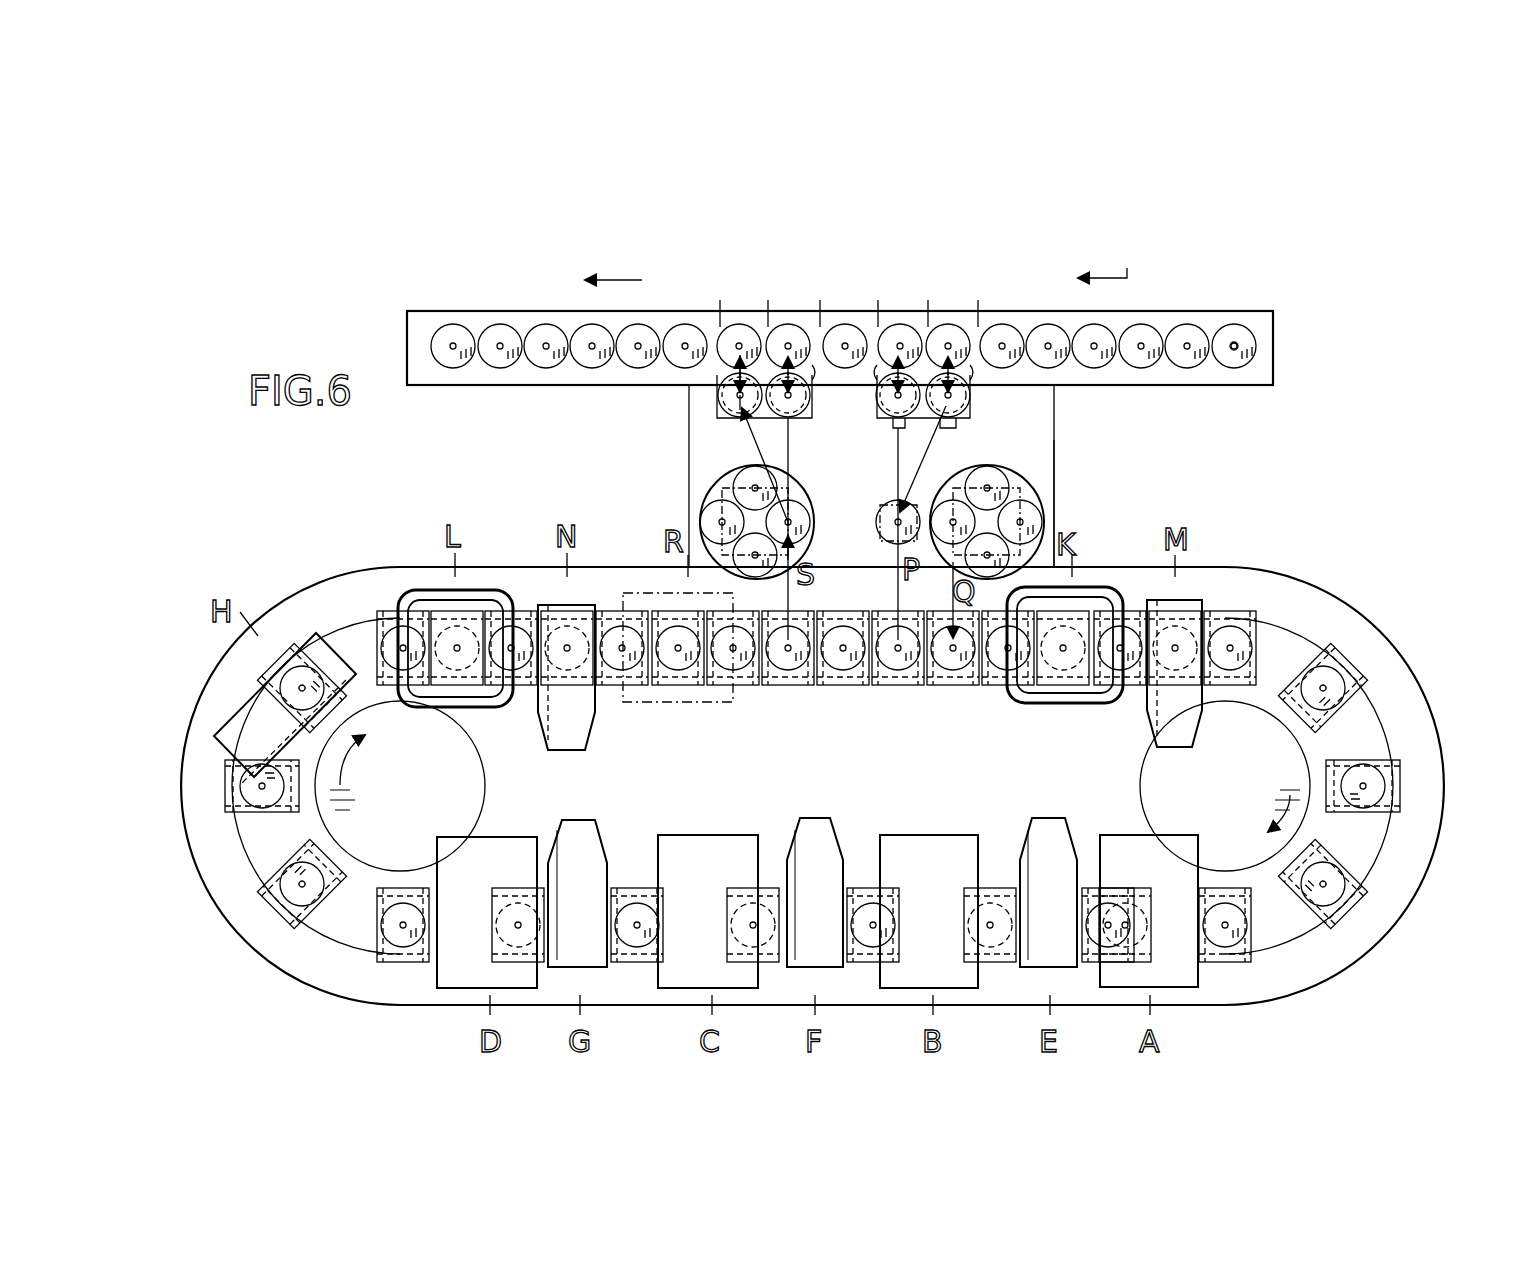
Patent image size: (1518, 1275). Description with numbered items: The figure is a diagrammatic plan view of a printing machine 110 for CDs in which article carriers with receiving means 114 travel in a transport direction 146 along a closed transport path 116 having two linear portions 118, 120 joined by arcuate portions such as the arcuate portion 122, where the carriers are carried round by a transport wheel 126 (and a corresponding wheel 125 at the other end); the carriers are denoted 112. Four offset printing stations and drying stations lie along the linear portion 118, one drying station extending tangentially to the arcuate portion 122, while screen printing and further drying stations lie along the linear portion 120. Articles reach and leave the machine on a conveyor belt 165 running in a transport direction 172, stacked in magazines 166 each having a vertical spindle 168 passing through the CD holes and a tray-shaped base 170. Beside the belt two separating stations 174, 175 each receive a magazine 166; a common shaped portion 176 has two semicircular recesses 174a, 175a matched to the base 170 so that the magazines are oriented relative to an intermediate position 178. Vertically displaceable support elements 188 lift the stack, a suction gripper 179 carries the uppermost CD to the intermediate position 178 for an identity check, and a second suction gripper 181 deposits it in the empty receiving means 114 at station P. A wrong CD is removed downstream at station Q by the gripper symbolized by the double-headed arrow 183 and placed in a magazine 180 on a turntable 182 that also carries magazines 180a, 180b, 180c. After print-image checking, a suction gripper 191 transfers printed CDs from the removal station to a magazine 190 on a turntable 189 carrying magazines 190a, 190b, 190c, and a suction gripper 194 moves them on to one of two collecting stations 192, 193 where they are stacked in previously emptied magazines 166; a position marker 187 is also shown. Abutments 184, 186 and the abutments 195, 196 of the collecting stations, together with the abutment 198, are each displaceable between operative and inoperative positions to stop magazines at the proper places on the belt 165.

The printing machine 110 is at (396, 548).
The pallet 112 is at (396, 966).
The receiving means 114 is at (962, 668).
The transport path 116 is at (684, 964).
The linear portion 118 is at (785, 943).
The linear portion 120 is at (812, 688).
The arcuate portion 122 is at (340, 928).
The right drive wheel 125 is at (1140, 788).
The transport wheel 126 is at (484, 786).
The transport direction 146 is at (1261, 803).
The conveyor belt 165 is at (1200, 315).
The magazine 166 is at (1012, 328).
The vertical spindle 168 is at (1240, 345).
The base 170 is at (1231, 328).
The transport direction 172 is at (1124, 258).
The separating station 174 is at (975, 412).
The semicircular recess 174a is at (966, 382).
The separating station 175 is at (878, 420).
The semicircular recess 175a is at (880, 410).
The shaped portion 176 is at (958, 424).
The intermediate position 178 is at (876, 528).
The suction gripper 179 is at (906, 502).
The magazine 180 is at (978, 551).
The magazine 180a is at (1004, 488).
The magazine 180b is at (1040, 518).
The magazine 180c is at (996, 668).
The second suction gripper 181 is at (890, 666).
The turntable 182 is at (1030, 566).
The double-headed arrow 183 is at (897, 636).
The abutment 184 is at (976, 307).
The abutment 186 is at (926, 307).
The conveyor position marker 187 is at (878, 309).
The support elements 188 is at (966, 500).
The turntable 189 is at (797, 478).
The magazine 190 is at (796, 504).
The magazine 190a is at (740, 482).
The magazine 190b is at (702, 515).
The magazine 190c is at (742, 566).
The suction gripper 191 is at (797, 538).
The collecting station 192 is at (822, 410).
The collecting station 193 is at (716, 418).
The suction gripper 194 is at (746, 418).
The abutment 195 is at (765, 309).
The abutment 196 is at (716, 308).
The abutment 198 is at (814, 402).